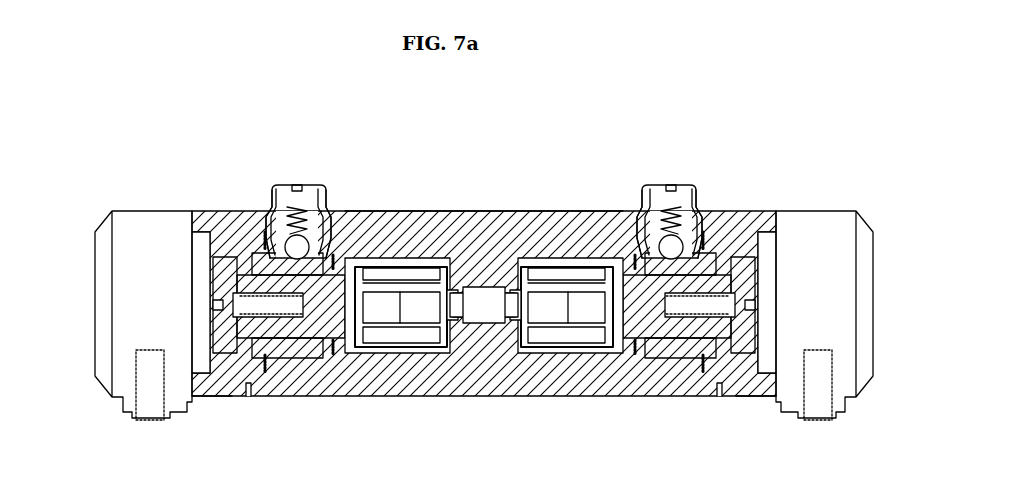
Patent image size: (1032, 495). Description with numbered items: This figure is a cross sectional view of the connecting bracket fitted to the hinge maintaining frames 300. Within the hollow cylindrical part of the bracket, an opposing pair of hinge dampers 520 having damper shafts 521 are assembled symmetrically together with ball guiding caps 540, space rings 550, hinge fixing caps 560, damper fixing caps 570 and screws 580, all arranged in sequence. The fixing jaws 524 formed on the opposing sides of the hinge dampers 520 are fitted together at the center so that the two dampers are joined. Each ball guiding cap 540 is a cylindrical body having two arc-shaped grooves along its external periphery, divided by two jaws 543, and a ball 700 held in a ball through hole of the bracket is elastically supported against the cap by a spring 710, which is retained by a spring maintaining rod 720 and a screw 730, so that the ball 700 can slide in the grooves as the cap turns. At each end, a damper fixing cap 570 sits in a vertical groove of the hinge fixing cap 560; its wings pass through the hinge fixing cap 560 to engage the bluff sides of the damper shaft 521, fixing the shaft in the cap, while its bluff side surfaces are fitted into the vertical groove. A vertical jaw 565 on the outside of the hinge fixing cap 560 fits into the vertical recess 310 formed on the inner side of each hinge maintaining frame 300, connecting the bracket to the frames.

The hinge maintaining frame 300 is at (122, 272).
The vertical recess 310 is at (158, 420).
The hinge damper 520 is at (440, 397).
The damper shaft 521 is at (402, 230).
The fixing jaw 524 is at (460, 323).
The ball guiding cap 540 is at (357, 352).
The jaw 543 is at (318, 363).
The space ring 550 is at (415, 345).
The hinge fixing cap 560 is at (238, 408).
The vertical jaw 565 is at (190, 252).
The damper fixing cap 570 is at (200, 398).
The screw 580 is at (245, 305).
The ball 700 is at (355, 222).
The spring 710 is at (265, 197).
The spring maintaining rod 720 is at (328, 197).
The screw 730 is at (287, 183).